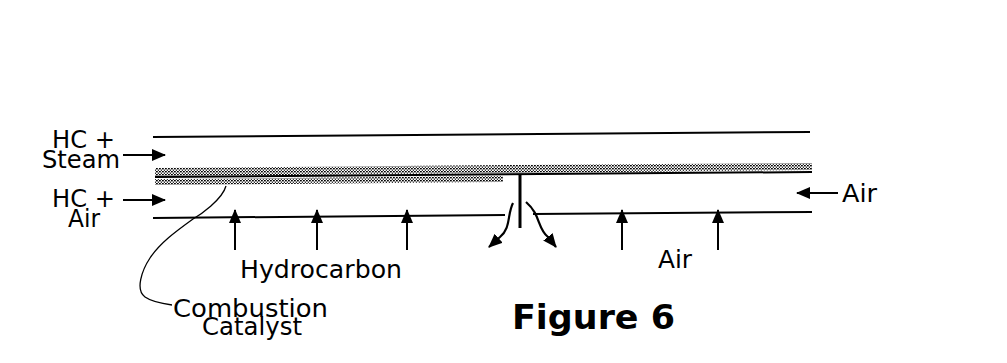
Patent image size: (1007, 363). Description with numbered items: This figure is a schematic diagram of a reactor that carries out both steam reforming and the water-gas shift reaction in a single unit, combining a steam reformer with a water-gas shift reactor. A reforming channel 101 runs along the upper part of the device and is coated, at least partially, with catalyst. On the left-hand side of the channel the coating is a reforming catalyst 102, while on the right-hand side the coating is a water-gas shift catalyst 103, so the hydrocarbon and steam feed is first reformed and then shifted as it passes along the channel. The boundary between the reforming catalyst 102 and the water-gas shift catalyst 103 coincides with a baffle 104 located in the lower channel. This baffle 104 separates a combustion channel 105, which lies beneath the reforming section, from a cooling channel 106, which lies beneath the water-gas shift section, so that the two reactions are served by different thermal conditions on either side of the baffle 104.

The reforming channel 101 is at (198, 158).
The reforming catalyst 102 is at (233, 173).
The water-gas shift catalyst 103 is at (655, 172).
The baffle 104 is at (520, 228).
The combustion channel 105 is at (433, 202).
The cooling channel 106 is at (672, 241).